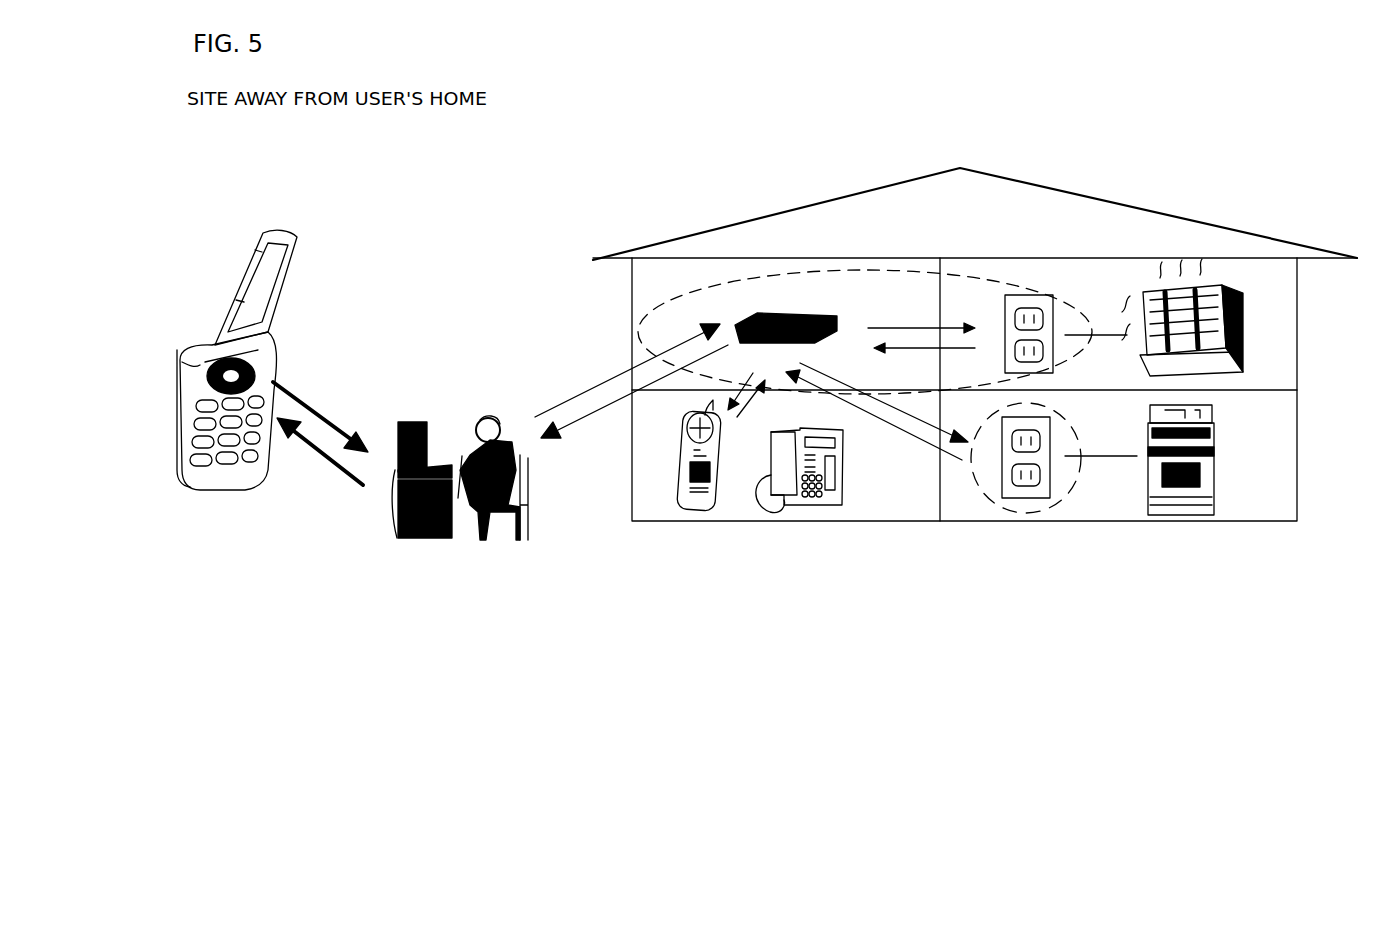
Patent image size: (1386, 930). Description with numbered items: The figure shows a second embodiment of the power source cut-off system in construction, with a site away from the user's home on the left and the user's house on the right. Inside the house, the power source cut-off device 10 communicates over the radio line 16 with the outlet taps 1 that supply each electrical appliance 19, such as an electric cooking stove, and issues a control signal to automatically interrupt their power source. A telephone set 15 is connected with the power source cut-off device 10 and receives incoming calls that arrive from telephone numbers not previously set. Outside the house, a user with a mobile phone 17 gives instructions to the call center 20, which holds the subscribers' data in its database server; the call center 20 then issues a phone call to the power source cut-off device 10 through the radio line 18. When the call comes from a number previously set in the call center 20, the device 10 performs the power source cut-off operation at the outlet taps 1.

The outlet (power outlet device) 1 is at (1043, 295).
The power source cut-off device 10 is at (788, 313).
The telephone set 15 is at (800, 508).
The radio line 16 is at (898, 323).
The mobile phone 17 is at (210, 490).
The radio line 18 is at (590, 385).
The electrical appliance 19 is at (1245, 335).
The call center 20 is at (417, 540).